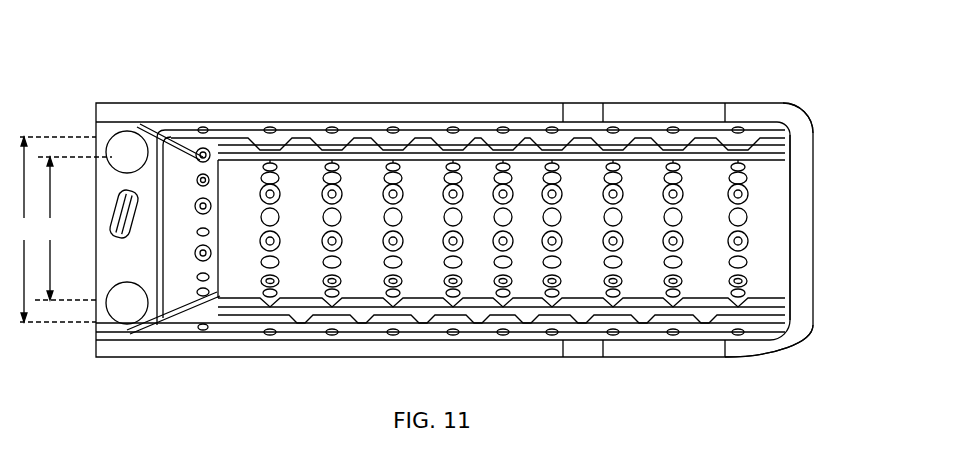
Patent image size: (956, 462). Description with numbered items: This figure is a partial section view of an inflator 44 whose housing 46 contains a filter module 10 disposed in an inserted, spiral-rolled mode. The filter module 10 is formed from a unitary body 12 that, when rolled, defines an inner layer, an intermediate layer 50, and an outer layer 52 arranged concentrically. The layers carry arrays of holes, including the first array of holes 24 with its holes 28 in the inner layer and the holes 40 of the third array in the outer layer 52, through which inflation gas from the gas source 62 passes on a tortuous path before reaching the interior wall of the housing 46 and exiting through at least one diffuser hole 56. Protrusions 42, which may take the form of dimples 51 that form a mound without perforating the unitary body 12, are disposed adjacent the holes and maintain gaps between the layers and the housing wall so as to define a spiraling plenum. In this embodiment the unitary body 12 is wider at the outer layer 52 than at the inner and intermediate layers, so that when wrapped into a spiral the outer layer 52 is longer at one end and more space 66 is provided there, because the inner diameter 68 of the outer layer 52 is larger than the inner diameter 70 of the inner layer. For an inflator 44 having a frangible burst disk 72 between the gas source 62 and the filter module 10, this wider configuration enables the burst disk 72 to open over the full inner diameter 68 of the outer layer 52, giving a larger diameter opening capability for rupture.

The filter module 10 is at (776, 277).
The unitary body 12 is at (778, 172).
The first array of holes 24 is at (467, 229).
The holes 28 is at (685, 217).
The holes 40 is at (452, 133).
The protrusions 42 is at (747, 280).
The inflator 44 is at (146, 88).
The housing 46 is at (800, 129).
The intermediate layer 50 is at (795, 315).
The dimples 51 is at (372, 150).
The outer layer 52 is at (793, 326).
The diffuser hole 56 is at (580, 117).
The gas source 62 is at (110, 212).
The space 66 is at (186, 148).
The inner diameter 68 is at (55, 229).
The inner diameter 70 is at (73, 228).
The burst disk 72 is at (209, 160).